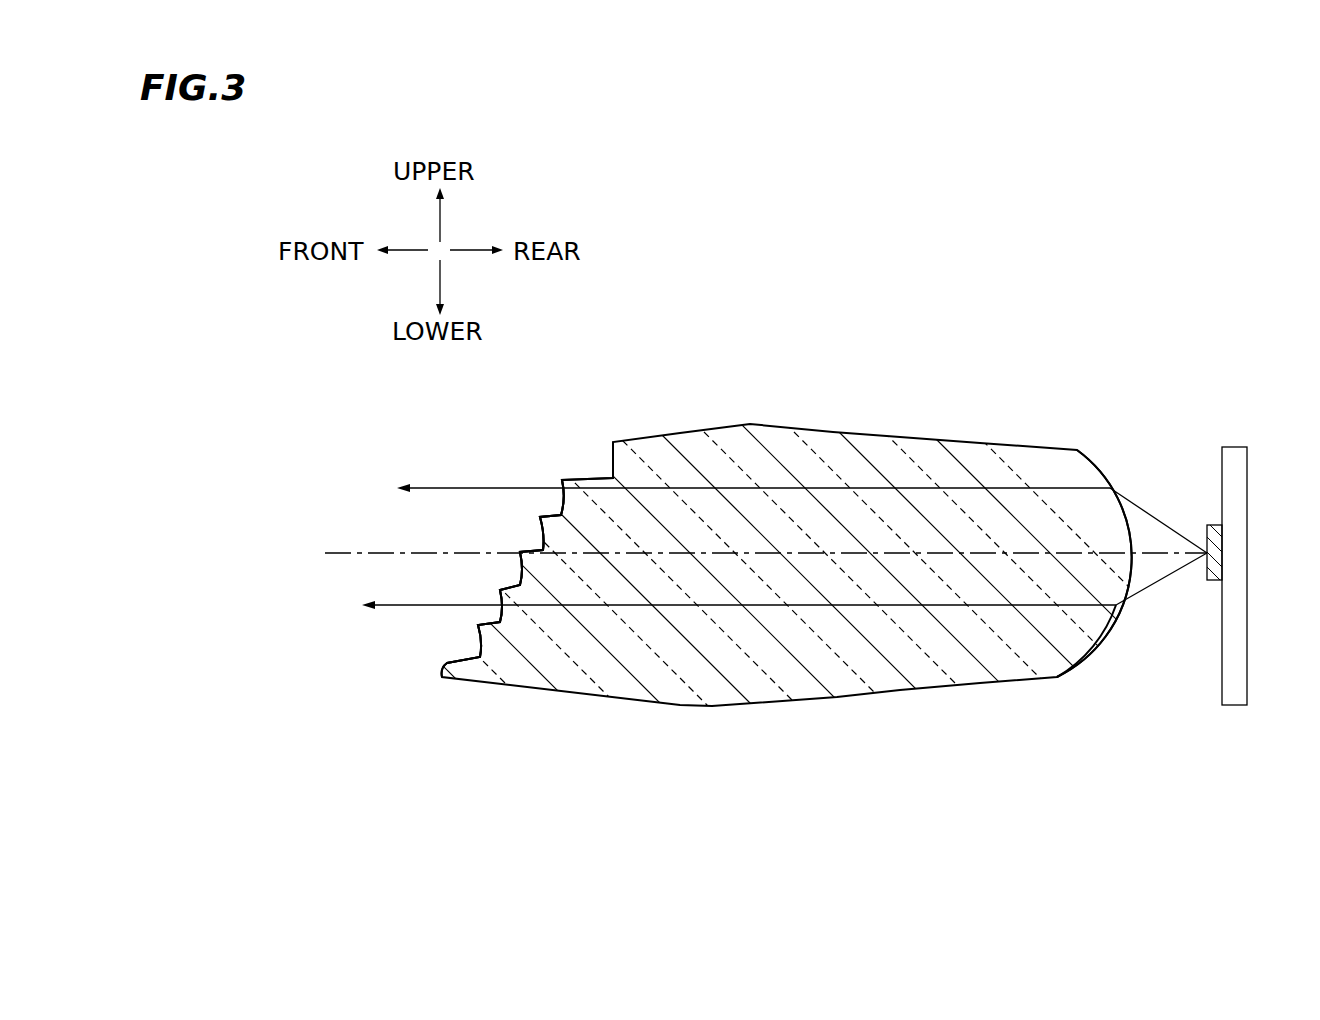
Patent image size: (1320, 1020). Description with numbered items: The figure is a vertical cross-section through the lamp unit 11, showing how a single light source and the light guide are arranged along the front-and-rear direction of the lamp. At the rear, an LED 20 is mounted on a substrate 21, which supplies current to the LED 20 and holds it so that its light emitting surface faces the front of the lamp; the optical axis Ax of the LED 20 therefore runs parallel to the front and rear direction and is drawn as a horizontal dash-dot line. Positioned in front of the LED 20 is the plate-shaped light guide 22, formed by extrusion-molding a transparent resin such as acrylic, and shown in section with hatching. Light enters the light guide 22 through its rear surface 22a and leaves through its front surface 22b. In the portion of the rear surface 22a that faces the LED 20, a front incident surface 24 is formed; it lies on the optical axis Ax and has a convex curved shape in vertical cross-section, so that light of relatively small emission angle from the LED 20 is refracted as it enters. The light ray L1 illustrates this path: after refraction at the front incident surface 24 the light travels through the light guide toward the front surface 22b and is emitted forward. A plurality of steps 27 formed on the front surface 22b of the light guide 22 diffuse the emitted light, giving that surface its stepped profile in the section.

The lamp unit 11 is at (890, 362).
The light guide 22 is at (955, 438).
The rear surface 22a is at (1102, 470).
The front surface 22b is at (528, 531).
The steps 27 is at (561, 479).
The front incident surface 24 is at (1128, 590).
The LED 20 is at (1207, 574).
The substrate 21 is at (1223, 688).
The light ray L1 is at (429, 483).
The optical axis Ax is at (746, 553).